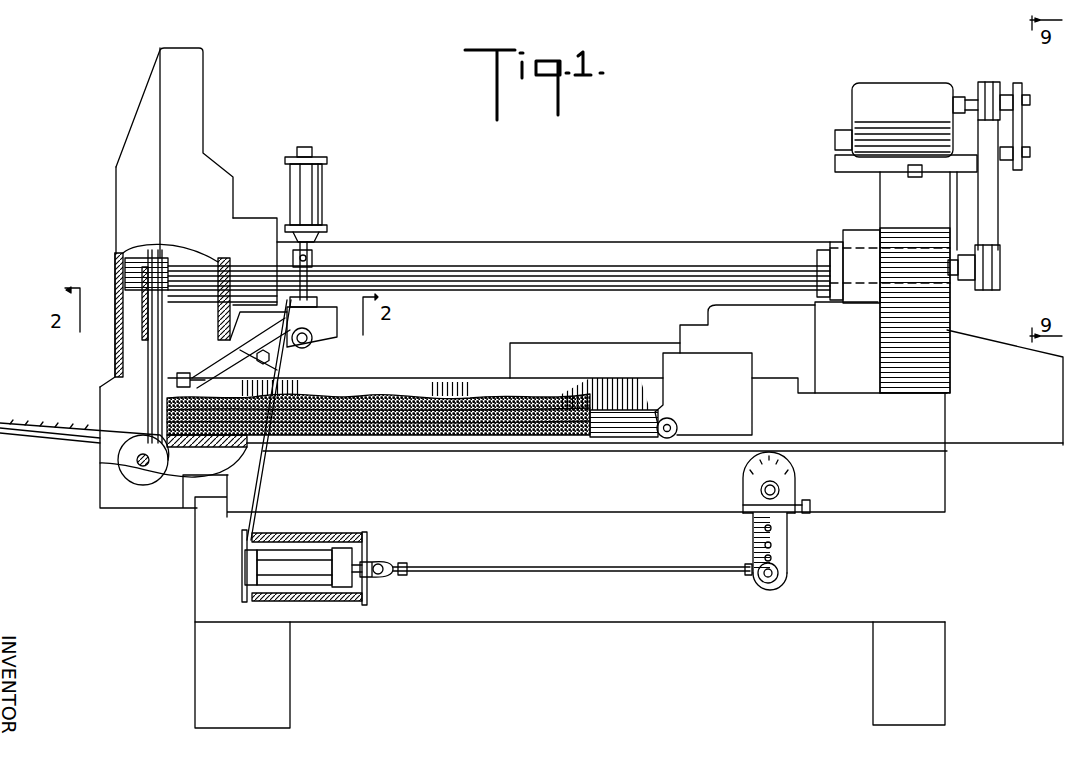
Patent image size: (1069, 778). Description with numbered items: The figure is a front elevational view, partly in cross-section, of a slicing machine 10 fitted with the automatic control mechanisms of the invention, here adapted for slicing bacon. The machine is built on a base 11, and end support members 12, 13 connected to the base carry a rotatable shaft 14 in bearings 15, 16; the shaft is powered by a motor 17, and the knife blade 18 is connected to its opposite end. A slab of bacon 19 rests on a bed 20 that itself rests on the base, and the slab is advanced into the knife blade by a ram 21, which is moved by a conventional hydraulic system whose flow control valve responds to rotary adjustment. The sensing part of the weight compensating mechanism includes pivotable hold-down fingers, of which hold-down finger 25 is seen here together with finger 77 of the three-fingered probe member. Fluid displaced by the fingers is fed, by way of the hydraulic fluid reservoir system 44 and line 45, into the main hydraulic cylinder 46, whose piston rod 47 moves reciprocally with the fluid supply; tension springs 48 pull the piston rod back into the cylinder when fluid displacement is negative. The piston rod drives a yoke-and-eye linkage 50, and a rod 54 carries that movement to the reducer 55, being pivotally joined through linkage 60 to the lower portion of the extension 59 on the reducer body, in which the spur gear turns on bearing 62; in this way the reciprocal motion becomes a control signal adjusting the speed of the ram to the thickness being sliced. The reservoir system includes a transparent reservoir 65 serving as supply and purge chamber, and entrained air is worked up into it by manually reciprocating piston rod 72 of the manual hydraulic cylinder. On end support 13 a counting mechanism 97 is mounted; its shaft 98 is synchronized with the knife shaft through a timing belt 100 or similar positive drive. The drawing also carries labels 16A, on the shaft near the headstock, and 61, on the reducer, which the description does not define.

The slicing machine 10 is at (90, 203).
The base 11 is at (580, 513).
The end support member 12 is at (228, 160).
The end support member 13 is at (893, 190).
The rotatable shaft 14 is at (483, 242).
The bearing 15 is at (842, 236).
The bearing 16 is at (255, 218).
The drive gear 16A is at (988, 280).
The motor 17 is at (704, 324).
The knife blade 18 is at (150, 366).
The slab of bacon 19 is at (410, 400).
The bed 20 is at (516, 447).
The ram 21 is at (614, 447).
The hold-down finger 25 is at (184, 378).
The hydraulic fluid reservoir system 44 is at (326, 234).
The line 45 is at (228, 475).
The main hydraulic cylinder 46 is at (349, 537).
The piston rod 47 is at (366, 576).
The tension springs 48 is at (292, 598).
The linkage 50 is at (432, 546).
The rod 54 is at (522, 567).
The reducer 55 is at (740, 478).
The extension 59 is at (782, 568).
The linkage 60 is at (763, 591).
The set screw 61 is at (810, 503).
The bearing 62 is at (762, 492).
The transparent reservoir 65 is at (318, 192).
The piston rod 72 is at (308, 344).
The finger 77 is at (212, 372).
The counting mechanism 97 is at (852, 93).
The shaft 98 is at (1000, 88).
The timing belt 100 is at (990, 212).